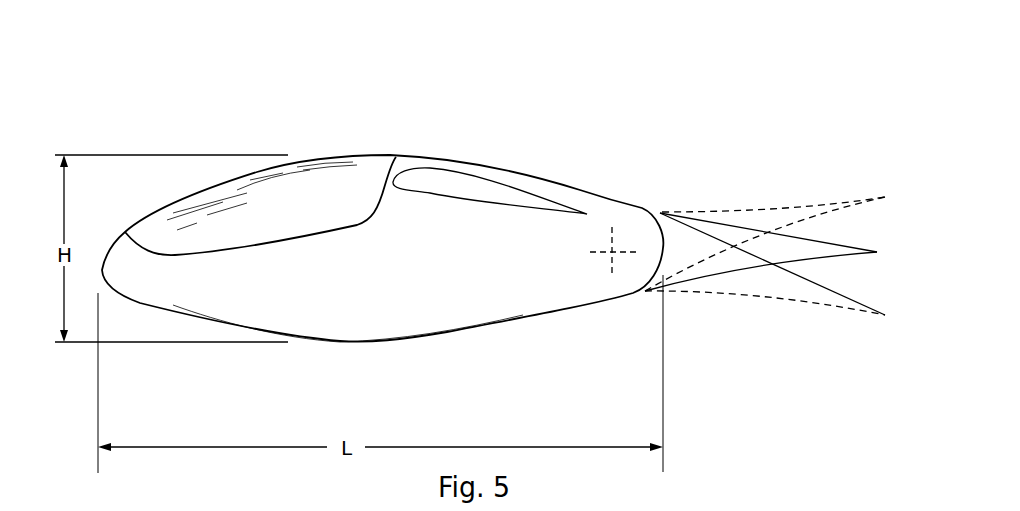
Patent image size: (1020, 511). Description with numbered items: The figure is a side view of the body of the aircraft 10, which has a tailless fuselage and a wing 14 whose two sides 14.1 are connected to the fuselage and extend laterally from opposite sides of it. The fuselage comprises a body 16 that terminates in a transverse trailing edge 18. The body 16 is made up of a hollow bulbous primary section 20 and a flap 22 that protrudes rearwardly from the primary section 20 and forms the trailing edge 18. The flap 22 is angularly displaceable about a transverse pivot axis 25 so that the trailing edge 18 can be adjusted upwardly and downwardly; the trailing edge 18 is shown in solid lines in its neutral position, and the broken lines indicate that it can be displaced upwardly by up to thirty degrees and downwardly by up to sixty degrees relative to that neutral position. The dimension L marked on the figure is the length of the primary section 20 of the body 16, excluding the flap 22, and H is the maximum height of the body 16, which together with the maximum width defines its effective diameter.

The aircraft 10 is at (235, 79).
The wing 14 is at (532, 164).
The wing side 14.1 is at (445, 183).
The body 16 is at (313, 379).
The trailing edge 18 is at (877, 252).
The primary section 20 is at (306, 102).
The flap 22 is at (710, 212).
The transverse pivot axis 25 is at (592, 250).